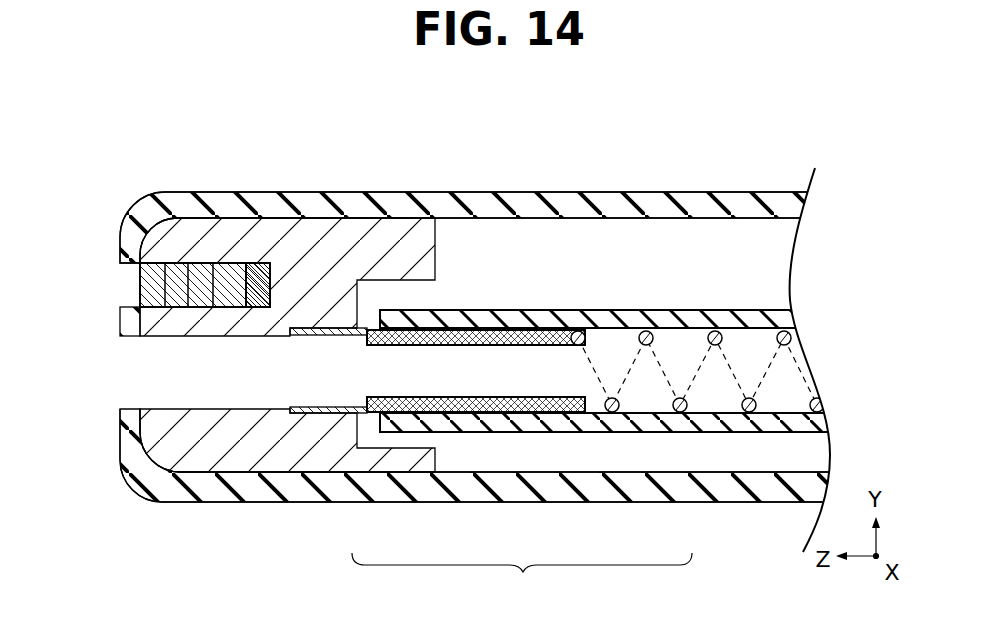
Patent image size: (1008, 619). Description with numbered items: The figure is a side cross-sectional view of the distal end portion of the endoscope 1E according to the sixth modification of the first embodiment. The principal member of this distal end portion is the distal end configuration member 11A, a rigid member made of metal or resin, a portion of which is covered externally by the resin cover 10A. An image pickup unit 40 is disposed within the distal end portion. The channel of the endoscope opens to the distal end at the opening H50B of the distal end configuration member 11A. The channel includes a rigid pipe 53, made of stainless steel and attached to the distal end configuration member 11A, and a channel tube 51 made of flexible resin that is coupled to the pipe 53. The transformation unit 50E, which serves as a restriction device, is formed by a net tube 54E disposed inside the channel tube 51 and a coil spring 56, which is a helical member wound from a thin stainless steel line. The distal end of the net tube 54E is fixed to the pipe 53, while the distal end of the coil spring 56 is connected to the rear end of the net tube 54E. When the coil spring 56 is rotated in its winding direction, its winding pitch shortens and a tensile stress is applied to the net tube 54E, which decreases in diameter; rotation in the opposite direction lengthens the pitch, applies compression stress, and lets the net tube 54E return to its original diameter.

The endoscope 1E is at (100, 175).
The resin cover 10A is at (712, 192).
The distal end configuration member 11A is at (267, 218).
The image pickup unit 40 is at (218, 277).
The transformation unit 50E is at (522, 579).
The channel tube 51 is at (698, 433).
The pipe 53 is at (348, 413).
The net tube 54E is at (510, 312).
The coil spring 56 is at (645, 330).
The opening H50B is at (123, 372).